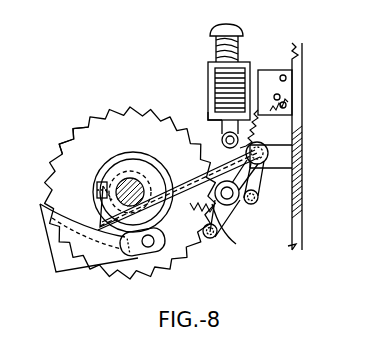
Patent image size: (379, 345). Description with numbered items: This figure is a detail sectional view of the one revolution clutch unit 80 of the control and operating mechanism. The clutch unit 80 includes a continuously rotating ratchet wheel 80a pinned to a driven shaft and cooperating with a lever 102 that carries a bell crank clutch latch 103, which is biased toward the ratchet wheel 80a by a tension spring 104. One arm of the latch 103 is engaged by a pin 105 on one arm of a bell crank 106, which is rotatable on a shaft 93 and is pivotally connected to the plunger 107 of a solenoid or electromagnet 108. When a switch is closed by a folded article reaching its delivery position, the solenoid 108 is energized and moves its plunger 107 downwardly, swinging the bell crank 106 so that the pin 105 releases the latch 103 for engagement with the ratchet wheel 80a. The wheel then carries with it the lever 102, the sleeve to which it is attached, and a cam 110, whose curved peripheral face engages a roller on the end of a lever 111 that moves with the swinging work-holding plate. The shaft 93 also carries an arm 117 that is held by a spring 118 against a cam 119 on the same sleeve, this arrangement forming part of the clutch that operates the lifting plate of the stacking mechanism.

The one revolution clutch unit 80 is at (130, 108).
The ratchet wheel 80a is at (78, 152).
The cam 110 is at (115, 158).
The arm 117 is at (205, 176).
The cam 119 is at (98, 213).
The lever 111 is at (60, 249).
The solenoid 108 is at (248, 68).
The plunger 107 is at (218, 124).
The spring 118 is at (272, 117).
The shaft 93 is at (270, 155).
The bell crank 106 is at (257, 175).
The pin 105 is at (250, 185).
The bell crank clutch latch 103 is at (232, 207).
The tension spring 104 is at (200, 215).
The lever 102 is at (232, 215).